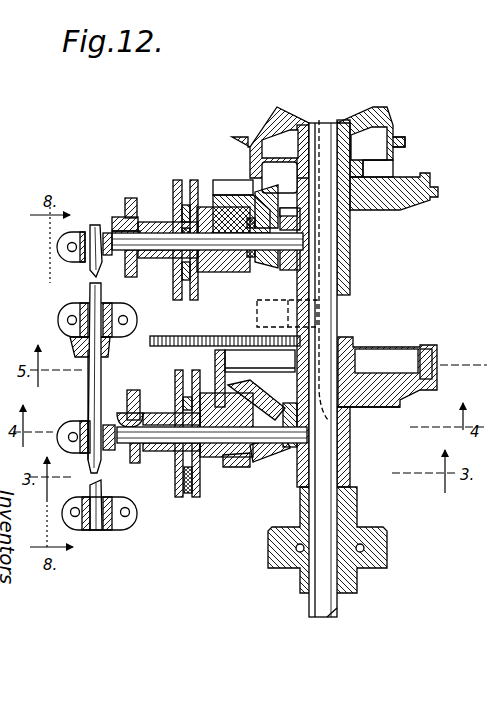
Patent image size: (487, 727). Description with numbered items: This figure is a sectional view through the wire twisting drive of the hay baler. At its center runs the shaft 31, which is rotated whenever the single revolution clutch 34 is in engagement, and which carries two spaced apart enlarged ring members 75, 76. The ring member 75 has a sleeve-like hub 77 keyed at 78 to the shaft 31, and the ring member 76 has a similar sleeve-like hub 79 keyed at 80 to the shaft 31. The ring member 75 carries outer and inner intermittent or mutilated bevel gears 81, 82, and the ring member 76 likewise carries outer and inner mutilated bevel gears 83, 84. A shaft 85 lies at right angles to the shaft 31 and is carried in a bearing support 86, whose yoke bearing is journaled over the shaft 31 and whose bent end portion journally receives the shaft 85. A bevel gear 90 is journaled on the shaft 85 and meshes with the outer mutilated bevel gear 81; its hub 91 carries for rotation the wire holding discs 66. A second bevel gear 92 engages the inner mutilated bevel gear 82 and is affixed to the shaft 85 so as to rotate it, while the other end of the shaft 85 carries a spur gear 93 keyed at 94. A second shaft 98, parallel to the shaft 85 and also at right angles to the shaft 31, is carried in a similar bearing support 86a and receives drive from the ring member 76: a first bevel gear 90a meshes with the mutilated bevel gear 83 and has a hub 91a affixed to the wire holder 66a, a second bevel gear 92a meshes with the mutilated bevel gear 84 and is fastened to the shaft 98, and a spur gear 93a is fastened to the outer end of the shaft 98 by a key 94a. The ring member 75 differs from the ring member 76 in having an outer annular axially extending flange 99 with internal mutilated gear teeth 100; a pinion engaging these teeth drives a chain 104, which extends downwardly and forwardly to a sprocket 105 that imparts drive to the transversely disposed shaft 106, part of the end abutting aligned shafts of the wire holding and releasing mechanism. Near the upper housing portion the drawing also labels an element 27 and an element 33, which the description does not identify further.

The housing head 27 is at (378, 112).
The shaft 31 is at (328, 257).
The lug 33 is at (405, 142).
The single revolution clutch 34 is at (397, 165).
The wire holding discs 66 is at (187, 495).
The wire holder 66a is at (185, 303).
The ring member 75 is at (394, 410).
The ring member 76 is at (400, 206).
The sleeve-like hub 77 is at (353, 360).
The key 78 is at (350, 413).
The sleeve-like hub 79 is at (300, 150).
The key 80 is at (321, 150).
The outer mutilated bevel gear 81 is at (232, 388).
The inner mutilated bevel gear 82 is at (287, 445).
The outer mutilated bevel gear 83 is at (233, 203).
The inner mutilated bevel gear 84 is at (270, 215).
The shaft 85 is at (163, 447).
The bearing support 86 is at (158, 416).
The bearing support 86a is at (150, 259).
The bevel gear 90 is at (235, 466).
The first bevel gear 90a is at (215, 273).
The hub 91 is at (205, 463).
The hub 91a is at (200, 282).
The second bevel gear 92 is at (266, 455).
The second bevel gear 92a is at (272, 258).
The spur gear 93 is at (133, 390).
The spur gear 93a is at (129, 198).
The key 94 is at (120, 413).
The key 94a is at (115, 235).
The second shaft 98 is at (157, 237).
The outer annular axially extending flange 99 is at (437, 357).
The mutilated gear teeth 100 is at (233, 336).
The chain 104 is at (175, 346).
The sprocket 105 is at (70, 343).
The shaft 106 is at (88, 408).